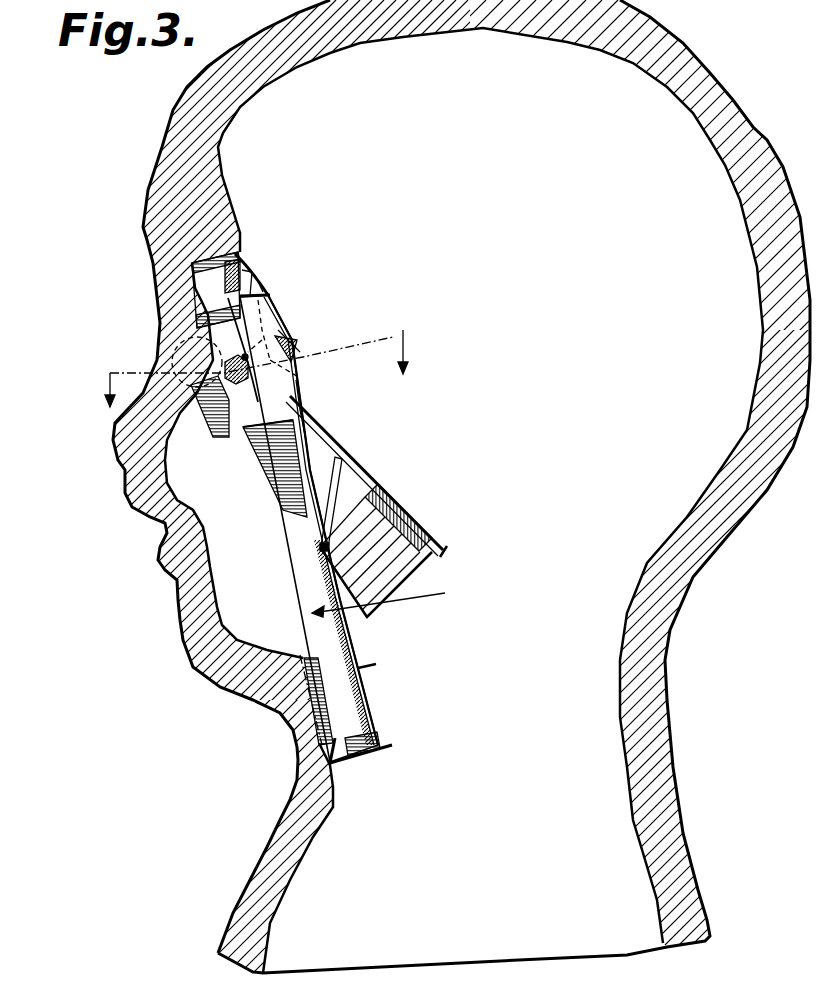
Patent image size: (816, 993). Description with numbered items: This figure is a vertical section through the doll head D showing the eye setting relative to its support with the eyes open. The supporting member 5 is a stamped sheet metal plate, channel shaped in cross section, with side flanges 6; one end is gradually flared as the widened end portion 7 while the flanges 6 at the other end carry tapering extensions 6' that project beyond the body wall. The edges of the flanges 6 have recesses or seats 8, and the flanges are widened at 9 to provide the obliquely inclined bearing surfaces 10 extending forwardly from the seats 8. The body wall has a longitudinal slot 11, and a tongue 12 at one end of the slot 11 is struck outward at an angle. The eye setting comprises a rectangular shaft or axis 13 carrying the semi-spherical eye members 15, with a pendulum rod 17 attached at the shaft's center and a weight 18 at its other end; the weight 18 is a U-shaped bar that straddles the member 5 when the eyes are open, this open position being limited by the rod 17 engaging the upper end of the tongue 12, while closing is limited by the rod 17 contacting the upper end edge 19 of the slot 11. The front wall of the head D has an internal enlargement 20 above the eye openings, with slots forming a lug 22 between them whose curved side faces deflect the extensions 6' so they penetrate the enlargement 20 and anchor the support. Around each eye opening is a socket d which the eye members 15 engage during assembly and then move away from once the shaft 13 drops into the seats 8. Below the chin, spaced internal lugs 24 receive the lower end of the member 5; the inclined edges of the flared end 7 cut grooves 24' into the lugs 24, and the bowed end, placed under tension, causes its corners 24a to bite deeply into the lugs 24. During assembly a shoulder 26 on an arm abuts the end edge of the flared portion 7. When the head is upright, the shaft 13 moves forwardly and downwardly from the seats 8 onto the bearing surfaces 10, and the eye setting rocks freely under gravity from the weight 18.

The doll head D is at (512, 12).
The internal enlargement or projection 20 is at (220, 223).
The lug 22 is at (209, 298).
The upper end edge of the slot 19 is at (285, 315).
The tapering extensions 6' is at (306, 264).
The recesses or seats 8 is at (307, 353).
The shaft or axis 13 is at (245, 365).
The eye members 15 is at (223, 347).
The sockets d is at (160, 335).
The obliquely inclined bearing surfaces 10 is at (187, 393).
The supporting member 5 is at (275, 470).
The flared or widened end portion 7 is at (377, 697).
The longitudinally extending slot 11 is at (312, 488).
The widened portions of the flanges 9 is at (227, 435).
The pendulum rod 17 is at (312, 410).
The side flanges 6 is at (361, 470).
The tongue 12 is at (336, 470).
The weight 18 is at (408, 520).
The internal lugs 24 is at (397, 687).
The corners of the flared end 24a is at (333, 743).
The shoulder 26 is at (377, 717).
The grooves 24' is at (387, 767).